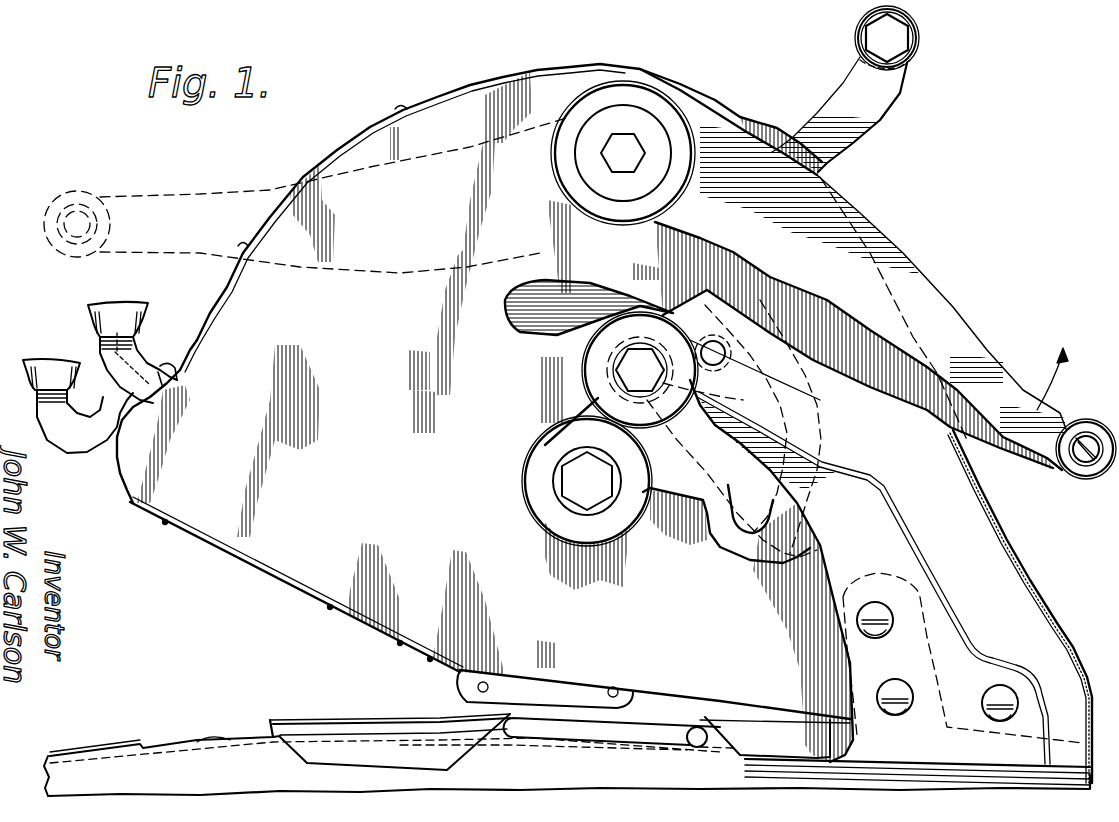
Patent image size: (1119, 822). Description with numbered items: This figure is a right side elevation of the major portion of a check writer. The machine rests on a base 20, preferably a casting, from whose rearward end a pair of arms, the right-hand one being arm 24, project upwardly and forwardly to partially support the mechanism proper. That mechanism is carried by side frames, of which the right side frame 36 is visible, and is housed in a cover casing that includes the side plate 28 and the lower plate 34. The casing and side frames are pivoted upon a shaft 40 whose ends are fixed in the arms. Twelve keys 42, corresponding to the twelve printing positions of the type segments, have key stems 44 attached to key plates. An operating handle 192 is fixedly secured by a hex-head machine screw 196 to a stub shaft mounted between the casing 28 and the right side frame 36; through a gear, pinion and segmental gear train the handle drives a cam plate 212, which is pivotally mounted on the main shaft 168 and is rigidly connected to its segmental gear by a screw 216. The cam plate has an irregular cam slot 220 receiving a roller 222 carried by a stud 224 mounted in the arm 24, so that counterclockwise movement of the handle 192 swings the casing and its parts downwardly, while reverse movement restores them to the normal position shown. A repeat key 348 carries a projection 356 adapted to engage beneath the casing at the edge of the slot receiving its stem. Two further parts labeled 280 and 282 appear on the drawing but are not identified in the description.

The base 20 is at (233, 752).
The arm 24 is at (1000, 573).
The side plate 28 is at (485, 413).
The lower plate 34 is at (262, 572).
The side frame 36 is at (521, 326).
The shaft 40 is at (993, 697).
The key 42 is at (83, 333).
The key stem 44 is at (108, 402).
The main shaft 168 is at (573, 483).
The operating handle 192 is at (970, 340).
The hex-head machine screw 196 is at (626, 146).
The cam plate 212 is at (610, 527).
The screw 216 is at (728, 362).
The cam slot 220 is at (750, 530).
The roller 222 is at (730, 400).
The stud 224 is at (623, 370).
The handle ring 280 is at (856, 36).
The handle arm 282 is at (830, 104).
The repeat key 348 is at (120, 305).
The projection 356 is at (170, 372).